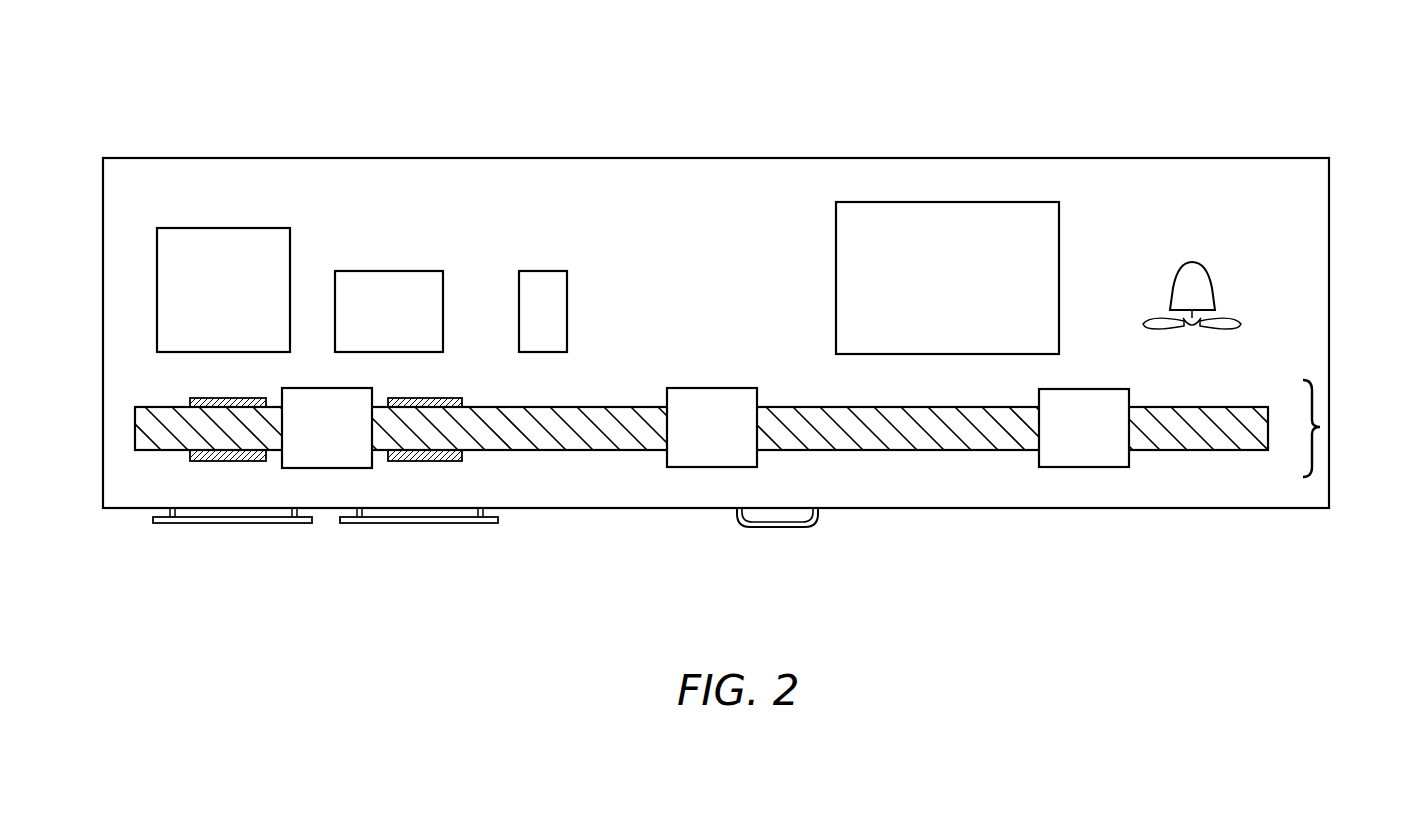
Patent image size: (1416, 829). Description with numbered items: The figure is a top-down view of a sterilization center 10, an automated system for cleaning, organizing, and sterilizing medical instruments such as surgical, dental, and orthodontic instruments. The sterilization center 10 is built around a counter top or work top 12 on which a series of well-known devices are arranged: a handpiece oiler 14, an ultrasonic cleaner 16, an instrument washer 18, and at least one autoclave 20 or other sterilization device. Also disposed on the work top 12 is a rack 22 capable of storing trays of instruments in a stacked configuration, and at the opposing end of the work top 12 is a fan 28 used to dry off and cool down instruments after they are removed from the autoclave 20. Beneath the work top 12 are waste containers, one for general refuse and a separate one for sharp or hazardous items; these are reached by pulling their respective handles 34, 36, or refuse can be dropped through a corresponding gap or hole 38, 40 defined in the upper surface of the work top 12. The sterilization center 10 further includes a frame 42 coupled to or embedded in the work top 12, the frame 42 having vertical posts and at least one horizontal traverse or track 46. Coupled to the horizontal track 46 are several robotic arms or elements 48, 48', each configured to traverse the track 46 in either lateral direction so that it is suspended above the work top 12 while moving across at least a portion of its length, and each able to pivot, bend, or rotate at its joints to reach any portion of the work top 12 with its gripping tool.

The sterilization center 10 is at (732, 358).
The work top 12 is at (1233, 185).
The handpiece oiler 14 is at (400, 280).
The ultrasonic cleaner 16 is at (553, 283).
The instrument washer 18 is at (808, 520).
The autoclave 20 is at (1022, 228).
The rack 22 is at (250, 257).
The fan 28 is at (1207, 287).
The handle 34 is at (450, 523).
The handle 36 is at (242, 523).
The gap or hole 38 is at (190, 400).
The gap or hole 40 is at (462, 400).
The frame 42 is at (706, 358).
The horizontal traverse or track 46 is at (610, 430).
The robotic arm 48 is at (334, 518).
The robotic arm 48' is at (725, 267).